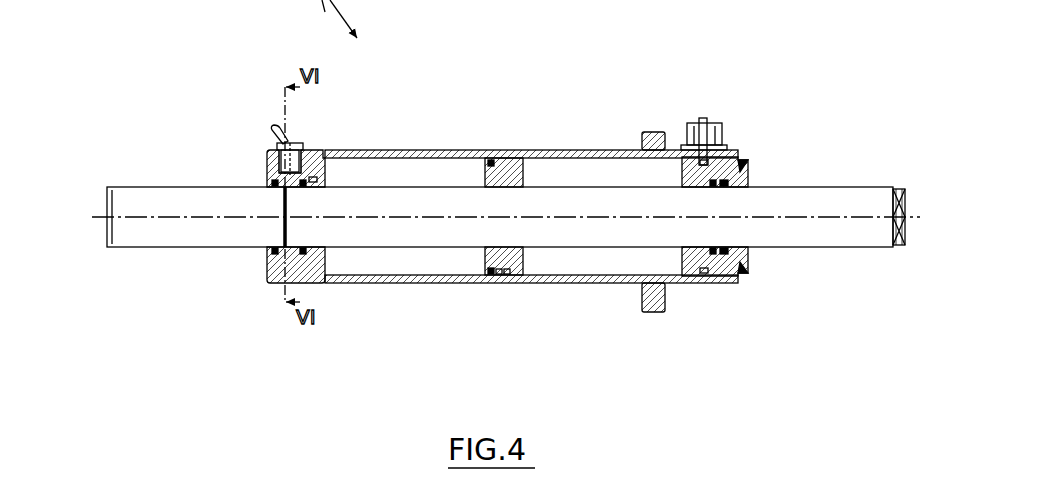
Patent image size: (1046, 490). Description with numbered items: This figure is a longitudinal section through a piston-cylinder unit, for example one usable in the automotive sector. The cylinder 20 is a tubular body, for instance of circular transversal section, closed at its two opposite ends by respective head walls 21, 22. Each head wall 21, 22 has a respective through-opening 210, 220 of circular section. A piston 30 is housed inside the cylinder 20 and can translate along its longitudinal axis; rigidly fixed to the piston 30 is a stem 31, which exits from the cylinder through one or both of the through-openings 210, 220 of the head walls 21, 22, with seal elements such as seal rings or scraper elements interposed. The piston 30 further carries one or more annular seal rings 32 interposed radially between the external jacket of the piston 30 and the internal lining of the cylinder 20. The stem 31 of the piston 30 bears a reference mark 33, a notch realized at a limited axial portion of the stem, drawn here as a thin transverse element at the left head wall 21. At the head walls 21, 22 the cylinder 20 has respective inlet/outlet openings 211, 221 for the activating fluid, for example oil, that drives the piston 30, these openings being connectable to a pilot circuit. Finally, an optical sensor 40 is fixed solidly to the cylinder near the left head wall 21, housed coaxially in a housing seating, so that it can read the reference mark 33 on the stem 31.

The cylinder 20 is at (440, 150).
The head wall 21 is at (268, 165).
The through-opening 210 is at (280, 197).
The inlet/outlet opening 211 is at (297, 144).
The head wall 22 is at (744, 158).
The through-opening 220 is at (730, 197).
The inlet/outlet opening 221 is at (700, 122).
The piston 30 is at (520, 276).
The stem 31 is at (835, 240).
The annular seal rings 32 is at (510, 276).
The reference mark 33 is at (280, 225).
The optical sensor 40 is at (272, 128).